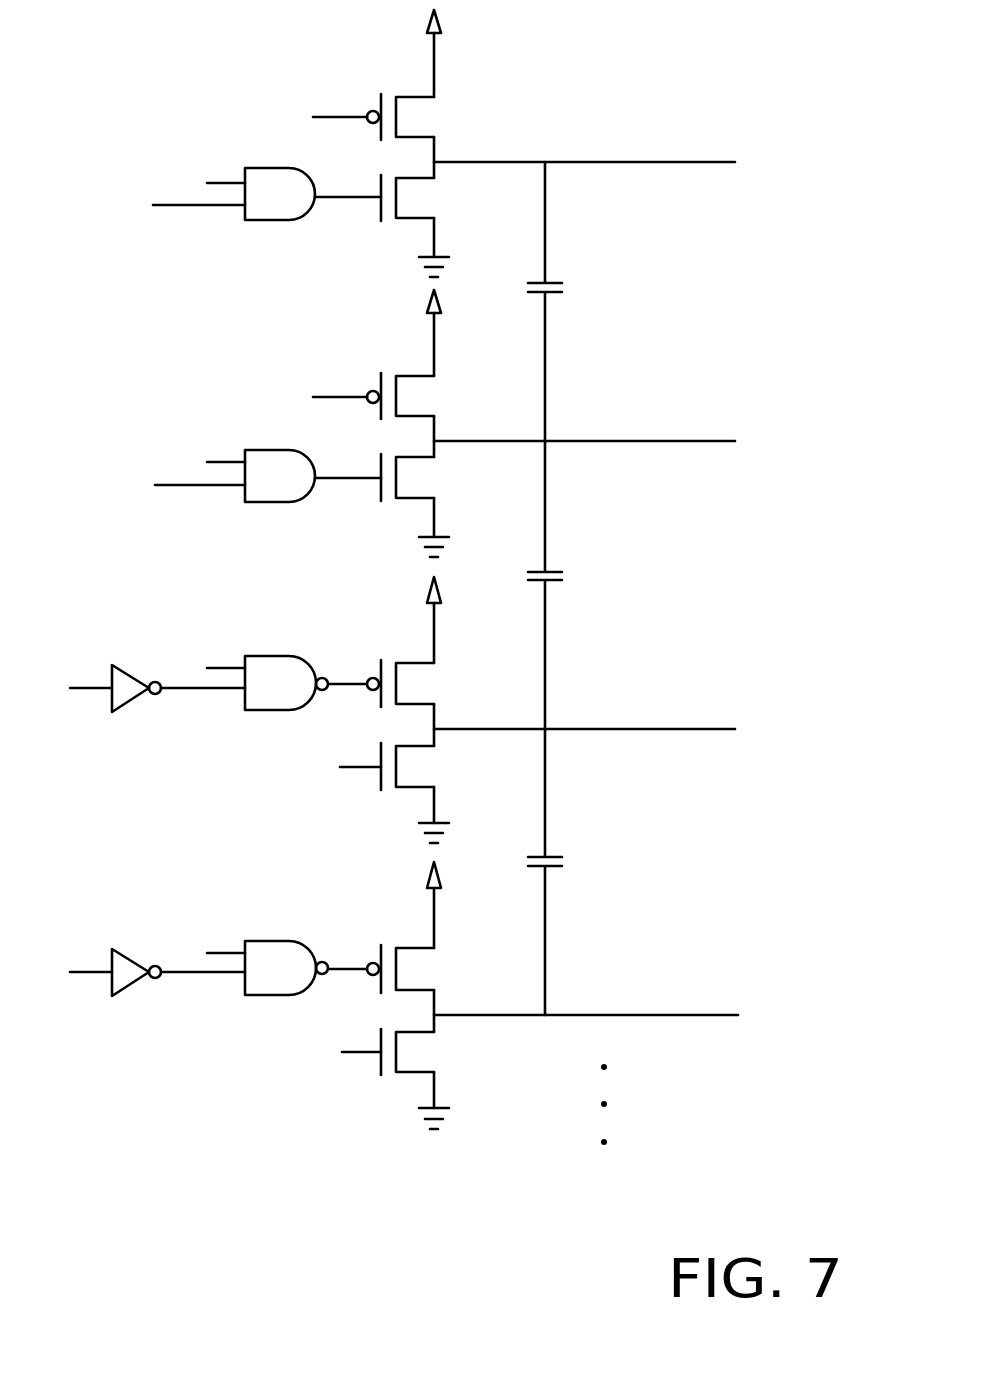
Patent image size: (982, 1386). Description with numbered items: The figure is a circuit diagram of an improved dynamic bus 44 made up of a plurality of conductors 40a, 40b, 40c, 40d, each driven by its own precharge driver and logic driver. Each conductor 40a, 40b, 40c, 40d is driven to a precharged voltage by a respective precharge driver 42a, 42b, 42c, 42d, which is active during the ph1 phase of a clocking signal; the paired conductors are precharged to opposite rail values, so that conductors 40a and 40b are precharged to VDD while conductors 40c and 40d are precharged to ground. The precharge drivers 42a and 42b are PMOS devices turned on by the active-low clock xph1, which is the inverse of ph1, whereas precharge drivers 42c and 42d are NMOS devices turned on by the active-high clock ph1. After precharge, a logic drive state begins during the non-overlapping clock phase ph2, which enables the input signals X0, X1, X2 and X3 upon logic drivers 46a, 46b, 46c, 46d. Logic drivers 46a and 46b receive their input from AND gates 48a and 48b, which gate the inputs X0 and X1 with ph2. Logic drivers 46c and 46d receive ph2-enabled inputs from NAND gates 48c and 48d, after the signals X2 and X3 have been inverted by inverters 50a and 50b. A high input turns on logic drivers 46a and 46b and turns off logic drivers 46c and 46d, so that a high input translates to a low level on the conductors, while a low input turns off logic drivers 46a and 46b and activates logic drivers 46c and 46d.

The dynamic bus 44 is at (611, 52).
The conductor 40a is at (705, 162).
The conductor 40b is at (707, 441).
The conductor 40c is at (707, 729).
The conductor 40d is at (710, 1015).
The precharge driver 42a is at (417, 117).
The precharge driver 42b is at (418, 397).
The precharge driver 42c is at (422, 763).
The precharge driver 42d is at (423, 1048).
The logic driver 46a is at (422, 197).
The logic driver 46b is at (422, 477).
The logic driver 46c is at (419, 685).
The logic driver 46d is at (420, 968).
The AND gate 48a is at (273, 220).
The AND gate 48b is at (273, 502).
The NAND gate 48c is at (262, 710).
The NAND gate 48d is at (262, 995).
The inverter 50a is at (128, 702).
The inverter 50b is at (128, 986).